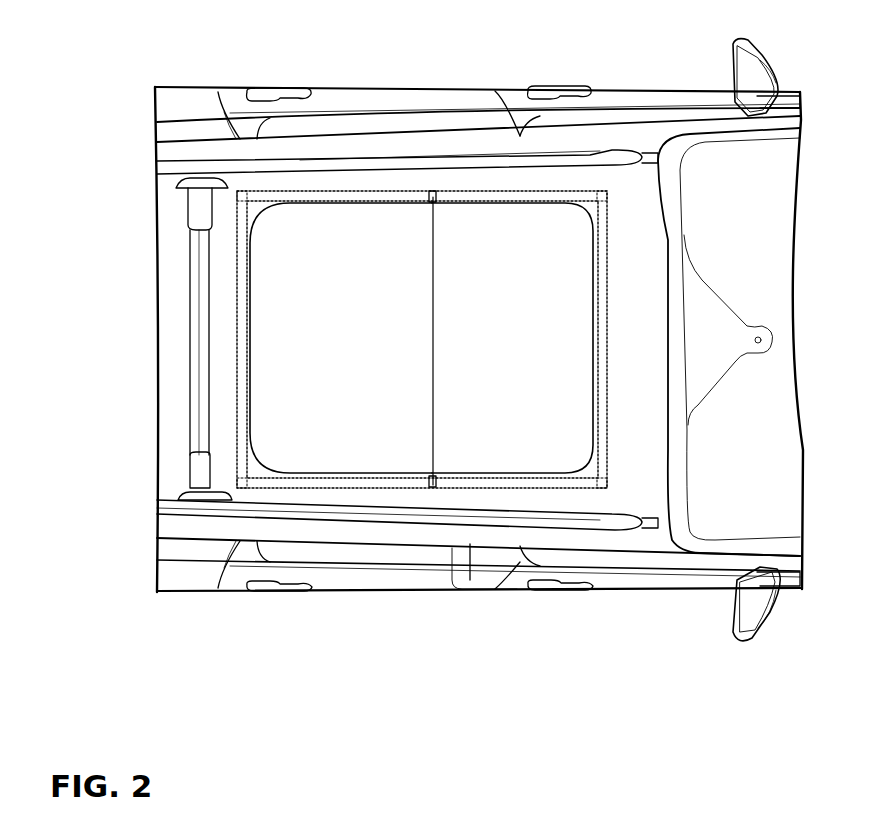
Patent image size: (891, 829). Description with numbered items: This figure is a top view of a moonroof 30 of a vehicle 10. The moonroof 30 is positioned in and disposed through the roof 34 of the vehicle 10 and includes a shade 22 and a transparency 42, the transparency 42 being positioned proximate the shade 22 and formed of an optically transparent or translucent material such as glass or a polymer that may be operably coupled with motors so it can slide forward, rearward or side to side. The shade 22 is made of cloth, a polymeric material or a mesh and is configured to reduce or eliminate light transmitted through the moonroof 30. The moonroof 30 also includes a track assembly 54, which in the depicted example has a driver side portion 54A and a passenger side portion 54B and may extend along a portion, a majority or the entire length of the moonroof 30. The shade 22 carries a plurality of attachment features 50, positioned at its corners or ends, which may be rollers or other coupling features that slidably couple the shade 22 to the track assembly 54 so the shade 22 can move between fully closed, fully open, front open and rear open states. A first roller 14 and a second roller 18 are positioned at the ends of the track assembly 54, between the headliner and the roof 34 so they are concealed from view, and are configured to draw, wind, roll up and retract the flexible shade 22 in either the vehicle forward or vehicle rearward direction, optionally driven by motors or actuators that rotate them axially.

The vehicle 10 is at (827, 103).
The first roller 14 is at (604, 209).
The second roller 18 is at (237, 417).
The shade 22 is at (313, 342).
The moonroof 30 is at (408, 487).
The roof 34 is at (637, 298).
The transparency 42 is at (488, 237).
The attachment features 50 is at (431, 191).
The track assembly 54 is at (388, 616).
The driver side portion 54A is at (322, 197).
The passenger side portion 54B is at (382, 480).